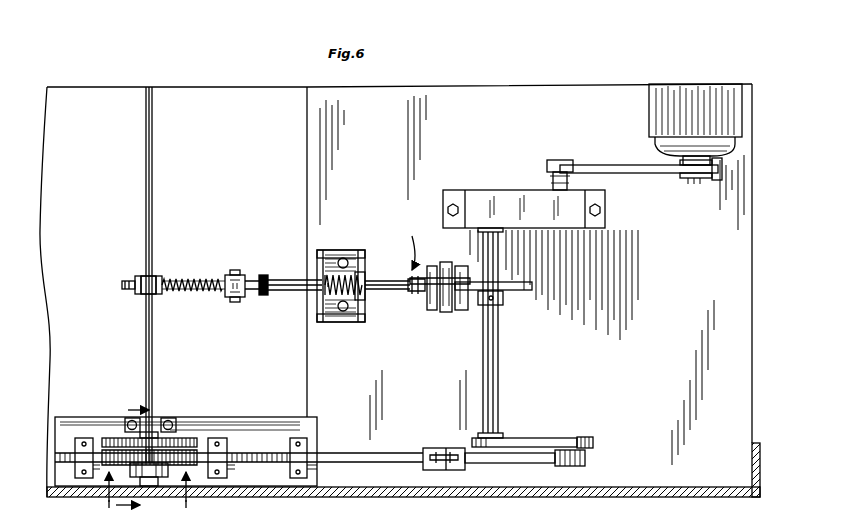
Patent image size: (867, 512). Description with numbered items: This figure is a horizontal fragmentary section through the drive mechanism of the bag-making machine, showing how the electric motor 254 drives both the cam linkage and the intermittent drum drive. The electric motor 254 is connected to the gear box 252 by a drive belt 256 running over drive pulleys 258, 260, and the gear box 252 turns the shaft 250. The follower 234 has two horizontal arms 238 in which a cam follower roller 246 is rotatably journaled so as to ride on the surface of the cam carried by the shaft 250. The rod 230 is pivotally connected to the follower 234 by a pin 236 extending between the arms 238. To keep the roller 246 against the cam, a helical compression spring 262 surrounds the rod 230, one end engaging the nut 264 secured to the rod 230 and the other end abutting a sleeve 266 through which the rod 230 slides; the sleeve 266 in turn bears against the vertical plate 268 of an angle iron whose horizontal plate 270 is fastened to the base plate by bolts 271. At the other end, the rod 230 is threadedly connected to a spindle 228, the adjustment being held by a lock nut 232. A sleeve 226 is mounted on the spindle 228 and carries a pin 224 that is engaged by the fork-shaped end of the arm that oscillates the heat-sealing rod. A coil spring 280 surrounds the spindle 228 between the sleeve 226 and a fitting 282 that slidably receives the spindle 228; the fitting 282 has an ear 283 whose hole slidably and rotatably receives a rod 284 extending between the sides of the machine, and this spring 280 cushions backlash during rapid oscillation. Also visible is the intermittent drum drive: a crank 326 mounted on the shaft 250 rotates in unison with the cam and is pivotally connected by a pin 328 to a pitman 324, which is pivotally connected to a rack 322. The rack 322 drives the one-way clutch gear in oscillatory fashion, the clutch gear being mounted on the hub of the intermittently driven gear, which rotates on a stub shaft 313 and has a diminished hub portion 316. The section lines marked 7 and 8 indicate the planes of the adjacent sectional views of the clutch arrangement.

The pin 224 is at (236, 270).
The sleeve 226 is at (228, 297).
The spindle 228 is at (258, 280).
The rod 230 is at (390, 280).
The lock nut 232 is at (262, 296).
The follower 234 is at (401, 244).
The pin 236 is at (412, 292).
The horizontal arms 238 is at (432, 300).
The cam follower roller 246 is at (444, 310).
The shaft 250 is at (499, 325).
The gear box 252 is at (544, 198).
The electric motor 254 is at (680, 92).
The drive belt 256 is at (636, 174).
The drive pulley 258 is at (688, 180).
The bracket 260 is at (568, 163).
The helical compression spring 262 is at (358, 254).
The nut 264 is at (361, 272).
The sleeve 266 is at (326, 284).
The vertical plate 268 is at (318, 312).
The horizontal plate 270 is at (362, 312).
The bolts 271 is at (343, 312).
The coil spring 280 is at (190, 280).
The fitting 282 is at (138, 292).
The ear 283 is at (144, 278).
The rod 284 is at (146, 334).
The stub shaft 313 is at (126, 438).
The diminished hub portion 316 is at (180, 440).
The rack 322 is at (266, 440).
The pitman 324 is at (540, 462).
The crank 326 is at (543, 440).
The pin 328 is at (580, 437).
The section line 7- 7 is at (144, 492).
The section line 8- 8 is at (132, 402).